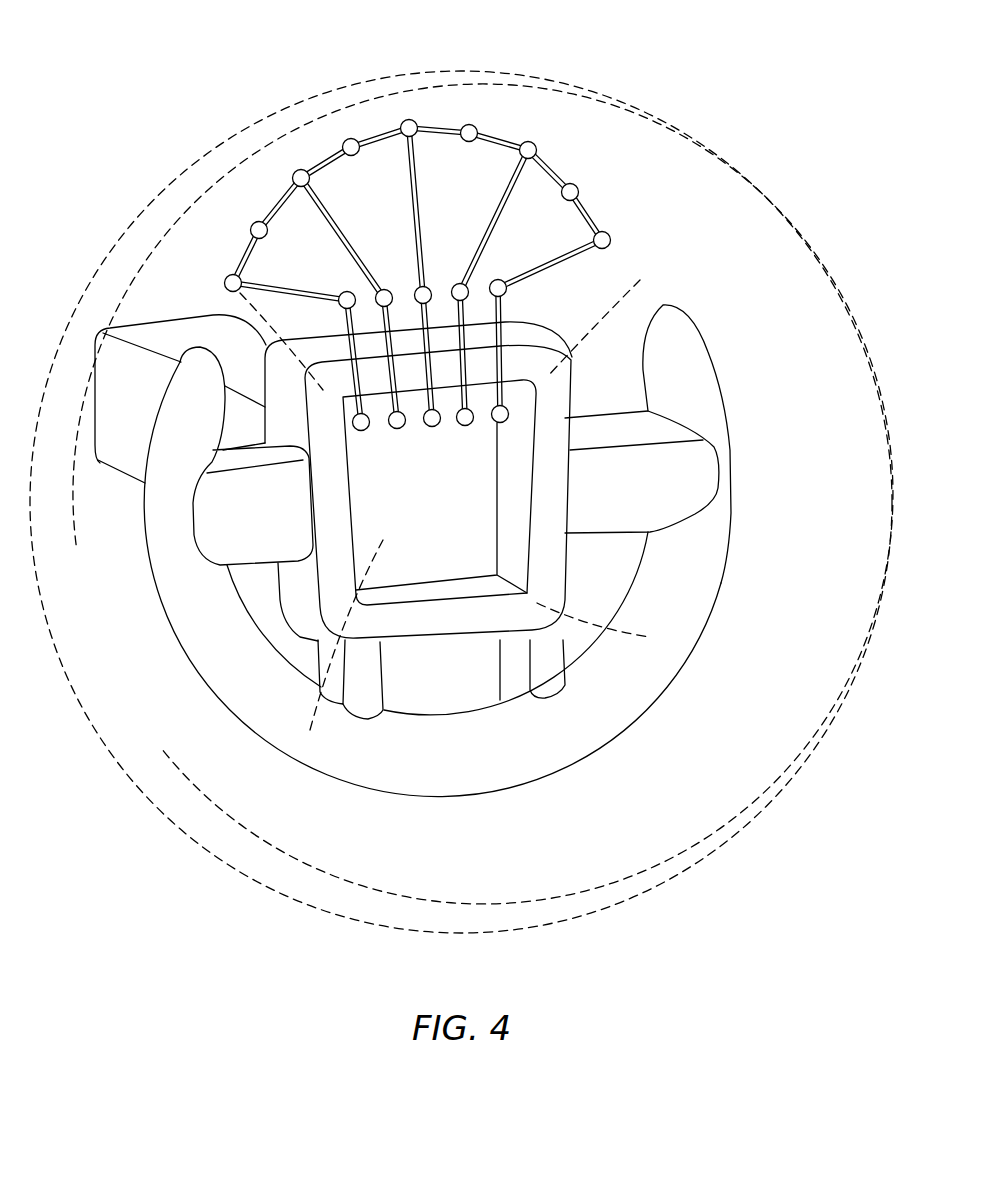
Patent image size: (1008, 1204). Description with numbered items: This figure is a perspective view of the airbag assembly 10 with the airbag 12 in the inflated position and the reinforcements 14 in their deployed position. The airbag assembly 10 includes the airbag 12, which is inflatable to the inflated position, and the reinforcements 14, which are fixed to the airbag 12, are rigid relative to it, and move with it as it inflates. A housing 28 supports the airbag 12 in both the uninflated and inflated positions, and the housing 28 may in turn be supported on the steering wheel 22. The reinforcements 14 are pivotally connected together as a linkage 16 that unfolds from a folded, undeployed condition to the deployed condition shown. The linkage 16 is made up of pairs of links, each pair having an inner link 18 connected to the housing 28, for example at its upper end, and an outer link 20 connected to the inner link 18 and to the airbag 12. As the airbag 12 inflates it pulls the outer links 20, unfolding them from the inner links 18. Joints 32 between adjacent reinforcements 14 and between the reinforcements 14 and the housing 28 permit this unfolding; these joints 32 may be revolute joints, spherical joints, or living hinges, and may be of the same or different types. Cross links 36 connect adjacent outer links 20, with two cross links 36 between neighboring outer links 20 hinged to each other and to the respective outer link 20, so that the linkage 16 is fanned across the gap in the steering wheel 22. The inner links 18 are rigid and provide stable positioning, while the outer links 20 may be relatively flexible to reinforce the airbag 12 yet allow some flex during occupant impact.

The airbag assembly 10 is at (766, 114).
The airbag 12 is at (766, 194).
The reinforcements 14 is at (273, 203).
The linkage 16 is at (515, 110).
The inner link 18 is at (575, 357).
The outer link 20 is at (442, 331).
The steering wheel 22 is at (323, 780).
The housing 28 is at (425, 600).
The joints 32 is at (606, 233).
The cross links 36 is at (380, 133).